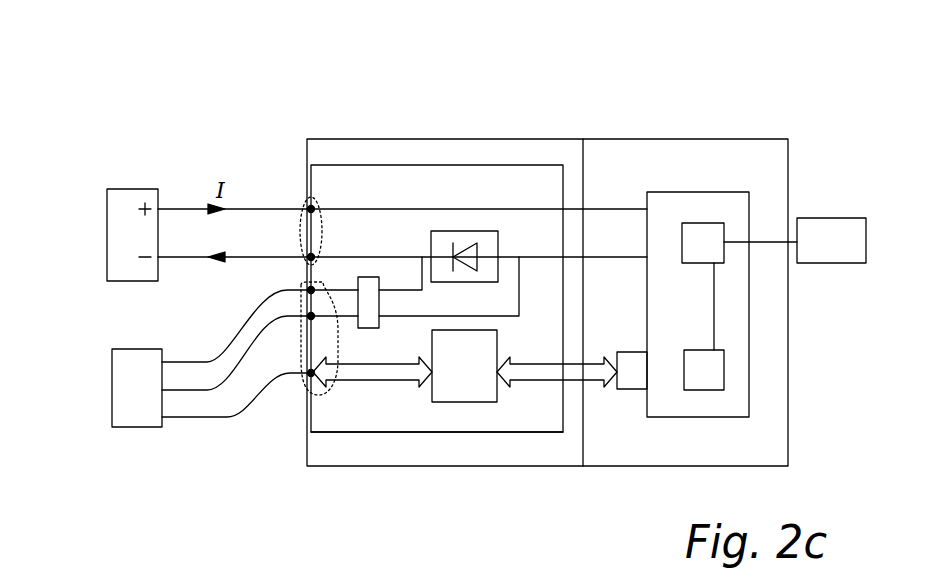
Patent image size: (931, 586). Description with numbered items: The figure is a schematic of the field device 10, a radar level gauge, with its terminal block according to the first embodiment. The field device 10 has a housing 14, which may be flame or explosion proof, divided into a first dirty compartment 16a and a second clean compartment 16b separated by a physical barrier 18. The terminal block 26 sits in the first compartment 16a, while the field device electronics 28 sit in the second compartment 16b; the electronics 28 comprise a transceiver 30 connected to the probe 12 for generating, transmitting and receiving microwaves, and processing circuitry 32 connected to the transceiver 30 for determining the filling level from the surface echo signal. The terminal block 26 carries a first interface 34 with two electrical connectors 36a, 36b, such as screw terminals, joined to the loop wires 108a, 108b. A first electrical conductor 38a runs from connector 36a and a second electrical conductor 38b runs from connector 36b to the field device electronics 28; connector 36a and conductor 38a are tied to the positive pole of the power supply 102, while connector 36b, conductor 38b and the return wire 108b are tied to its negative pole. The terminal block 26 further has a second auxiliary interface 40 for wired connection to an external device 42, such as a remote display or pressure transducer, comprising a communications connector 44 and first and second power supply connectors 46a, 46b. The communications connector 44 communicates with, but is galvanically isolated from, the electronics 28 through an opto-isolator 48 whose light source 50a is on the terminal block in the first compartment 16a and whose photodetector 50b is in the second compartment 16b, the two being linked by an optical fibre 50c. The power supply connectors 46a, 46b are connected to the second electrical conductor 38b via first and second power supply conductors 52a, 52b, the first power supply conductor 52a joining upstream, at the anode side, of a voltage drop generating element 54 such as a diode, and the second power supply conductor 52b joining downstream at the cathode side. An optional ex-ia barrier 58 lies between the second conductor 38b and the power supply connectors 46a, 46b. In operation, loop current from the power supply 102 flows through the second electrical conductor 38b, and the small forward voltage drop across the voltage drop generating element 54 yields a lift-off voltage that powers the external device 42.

The field device 10 is at (547, 233).
The probe 12 is at (845, 252).
The housing 14 is at (337, 138).
The first compartment 16a is at (377, 138).
The second compartment 16b is at (666, 264).
The physical barrier 18 is at (583, 184).
The terminal block 26 is at (403, 432).
The field device electronics 28 is at (702, 323).
The transceiver 30 is at (703, 223).
The processing circuitry 32 is at (704, 391).
The first interface 34 is at (303, 203).
The electrical connector 36a is at (315, 196).
The electrical connector 36b is at (306, 252).
The first electrical conductor 38a is at (432, 204).
The second electrical conductor 38b is at (548, 255).
The second auxiliary interface 40 is at (302, 372).
The external device 42 is at (132, 390).
The communications connector 44 is at (302, 383).
The first power supply connector 46a is at (316, 318).
The second power supply connector 46b is at (306, 290).
The opto-isolator 48 is at (539, 456).
The light source 50a is at (477, 402).
The photodetector 50b is at (618, 436).
The optical fibre 50c is at (548, 377).
The first power supply conductor 52a is at (521, 292).
The second power supply conductor 52b is at (400, 290).
The voltage drop generating element 54 is at (470, 231).
The ex-ia barrier 58 is at (366, 277).
The power supply 102 is at (115, 237).
The wire 108a is at (205, 208).
The wire 108b is at (205, 262).